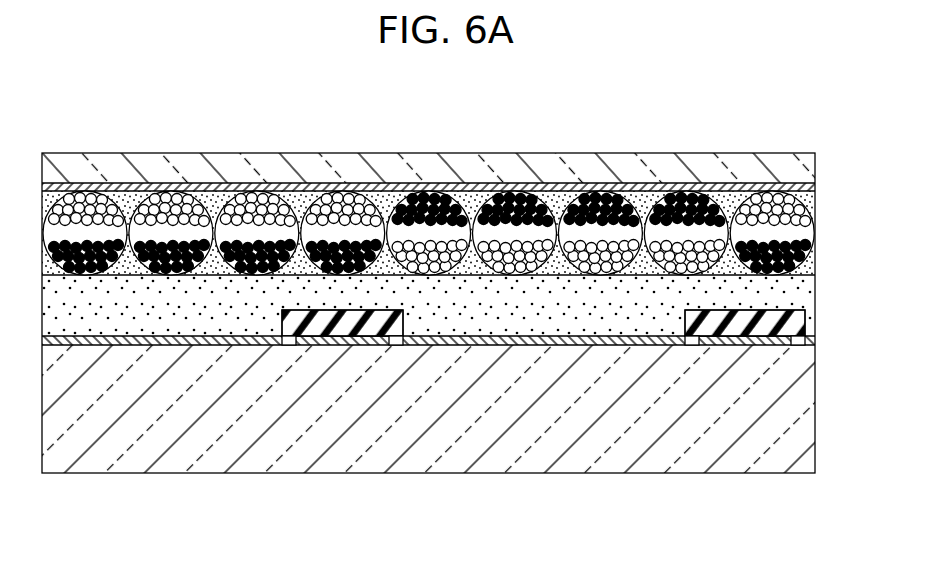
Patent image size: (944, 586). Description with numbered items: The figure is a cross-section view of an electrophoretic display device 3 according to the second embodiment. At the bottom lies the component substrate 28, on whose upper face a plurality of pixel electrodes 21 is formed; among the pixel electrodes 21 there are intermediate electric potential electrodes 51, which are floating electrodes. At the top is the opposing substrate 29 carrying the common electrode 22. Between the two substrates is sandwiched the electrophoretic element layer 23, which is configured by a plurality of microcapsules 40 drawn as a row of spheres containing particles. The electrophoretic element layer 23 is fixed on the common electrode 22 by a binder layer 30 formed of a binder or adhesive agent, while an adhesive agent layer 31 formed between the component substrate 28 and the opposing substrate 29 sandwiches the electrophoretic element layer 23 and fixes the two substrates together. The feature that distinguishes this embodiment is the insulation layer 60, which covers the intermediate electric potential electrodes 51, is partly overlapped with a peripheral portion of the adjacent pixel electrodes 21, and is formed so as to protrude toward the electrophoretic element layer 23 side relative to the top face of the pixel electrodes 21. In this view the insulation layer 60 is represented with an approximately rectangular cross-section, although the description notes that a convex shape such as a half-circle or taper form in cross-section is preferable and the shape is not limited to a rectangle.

The electrophoretic display device 3 is at (795, 120).
The opposing substrate 29 is at (812, 163).
The common electrode 22 is at (815, 186).
The binder layer 30 is at (815, 193).
The electrophoretic element layer 23 is at (831, 225).
The microcapsule 40 is at (812, 261).
The adhesive agent layer 31 is at (815, 290).
The pixel electrode 21 is at (815, 340).
The insulation layer 60 is at (375, 320).
The intermediate electric potential electrode 51 is at (357, 345).
The component substrate 28 is at (812, 415).